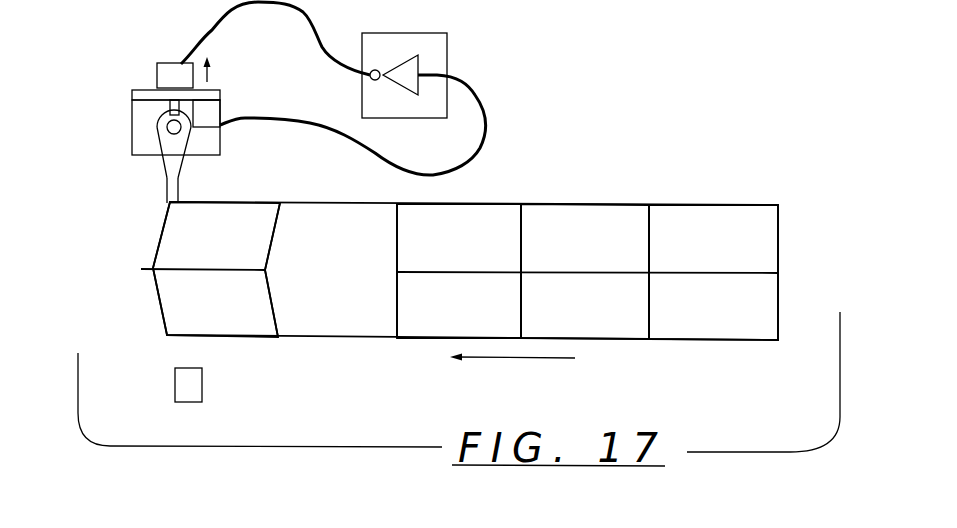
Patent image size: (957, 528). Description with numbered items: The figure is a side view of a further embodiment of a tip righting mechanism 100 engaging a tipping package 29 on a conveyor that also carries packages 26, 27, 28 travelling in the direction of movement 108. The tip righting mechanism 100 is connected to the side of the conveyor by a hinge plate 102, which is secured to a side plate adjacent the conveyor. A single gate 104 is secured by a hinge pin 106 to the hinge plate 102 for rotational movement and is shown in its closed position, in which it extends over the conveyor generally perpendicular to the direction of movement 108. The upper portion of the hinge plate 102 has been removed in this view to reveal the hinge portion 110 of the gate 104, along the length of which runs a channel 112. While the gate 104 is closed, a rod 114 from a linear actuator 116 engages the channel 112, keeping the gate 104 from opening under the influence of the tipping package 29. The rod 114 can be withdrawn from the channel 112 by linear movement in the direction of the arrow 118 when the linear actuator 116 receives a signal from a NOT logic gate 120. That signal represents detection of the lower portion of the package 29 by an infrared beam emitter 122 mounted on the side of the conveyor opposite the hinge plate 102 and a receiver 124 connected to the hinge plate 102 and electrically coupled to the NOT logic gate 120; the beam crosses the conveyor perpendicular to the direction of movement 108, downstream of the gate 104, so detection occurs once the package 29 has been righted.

The tip righting mechanism 100 is at (143, 68).
The hinge plate 102 is at (143, 90).
The gate 104 is at (168, 186).
The hinge pin 106 is at (184, 137).
The direction of movement 108 is at (535, 359).
The hinge portion 110 is at (184, 133).
The channel 112 is at (167, 119).
The rod 114 is at (170, 108).
The linear actuator 116 is at (173, 72).
The arrow 118 is at (210, 81).
The NOT logic gate 120 is at (437, 57).
The infrared beam emitter 122 is at (190, 388).
The receiver 124 is at (208, 113).
The package 26 is at (733, 262).
The package 27 is at (597, 262).
The package 28 is at (463, 261).
The package 29 is at (240, 258).